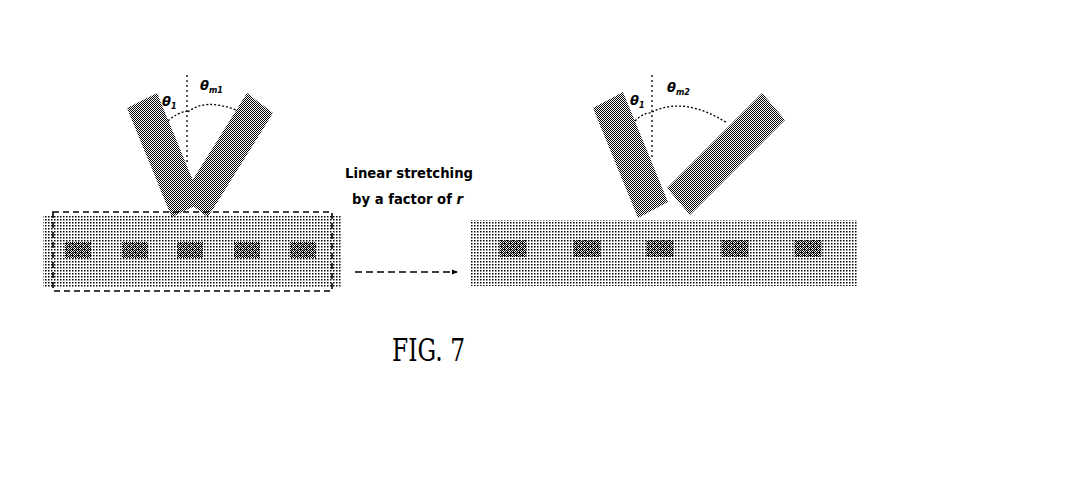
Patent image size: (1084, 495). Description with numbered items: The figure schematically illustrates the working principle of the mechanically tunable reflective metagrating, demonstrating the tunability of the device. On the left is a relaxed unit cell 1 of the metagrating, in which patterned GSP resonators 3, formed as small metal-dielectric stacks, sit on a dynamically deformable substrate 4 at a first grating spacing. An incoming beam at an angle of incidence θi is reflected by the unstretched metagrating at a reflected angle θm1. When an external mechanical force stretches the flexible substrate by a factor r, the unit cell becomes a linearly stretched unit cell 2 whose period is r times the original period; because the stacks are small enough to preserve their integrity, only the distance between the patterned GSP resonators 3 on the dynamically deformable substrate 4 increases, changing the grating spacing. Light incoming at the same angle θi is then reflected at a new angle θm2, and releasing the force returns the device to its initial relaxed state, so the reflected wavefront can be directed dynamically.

The unit cell of period a1 1 is at (336, 304).
The linearly stretched unit cell of period a2 = r·a1 2 is at (715, 264).
The patterned GSP resonators 3 is at (703, 214).
The dynamically deformable substrate 4 is at (775, 270).